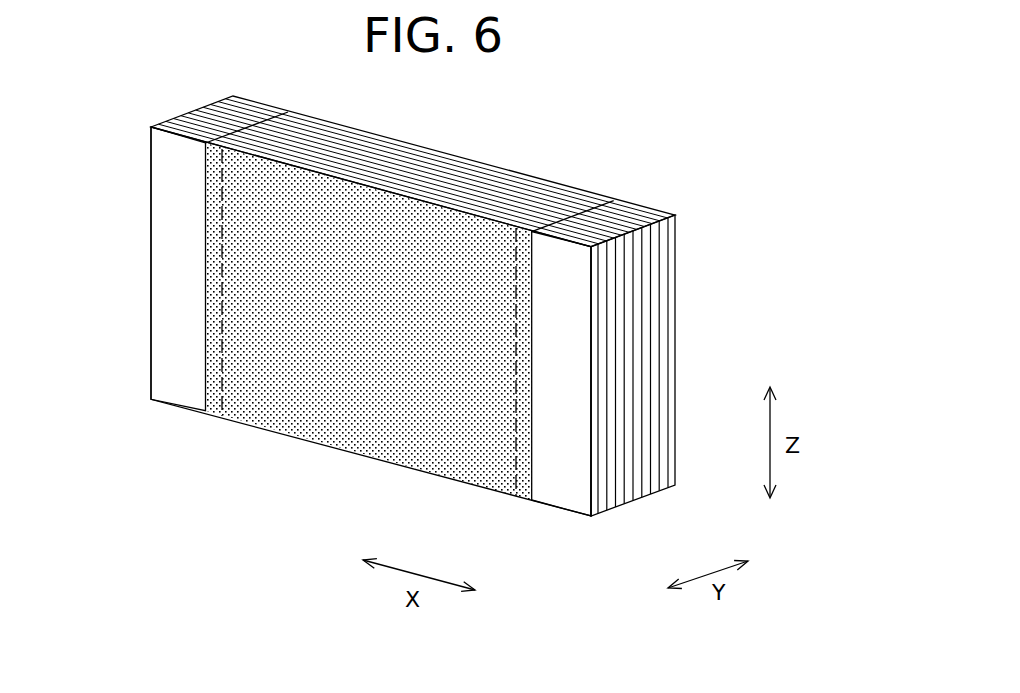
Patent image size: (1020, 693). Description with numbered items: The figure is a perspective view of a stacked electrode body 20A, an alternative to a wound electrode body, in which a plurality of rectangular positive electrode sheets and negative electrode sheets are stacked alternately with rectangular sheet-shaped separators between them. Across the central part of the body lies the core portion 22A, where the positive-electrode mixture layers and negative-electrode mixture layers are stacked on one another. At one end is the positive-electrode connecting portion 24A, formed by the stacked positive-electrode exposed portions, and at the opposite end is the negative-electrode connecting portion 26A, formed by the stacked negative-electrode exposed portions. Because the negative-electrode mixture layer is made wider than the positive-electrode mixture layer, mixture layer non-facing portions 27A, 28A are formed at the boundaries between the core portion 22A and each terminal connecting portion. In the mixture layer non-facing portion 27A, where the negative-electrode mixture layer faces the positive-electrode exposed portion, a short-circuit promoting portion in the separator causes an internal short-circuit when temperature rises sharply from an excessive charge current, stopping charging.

The stacked electrode body 20A is at (720, 121).
The core portion 22A is at (348, 448).
The positive-electrode connecting portion 24A is at (167, 354).
The negative-electrode connecting portion 26A is at (569, 487).
The mixture layer non-facing portion 27A is at (214, 407).
The mixture layer non-facing portion 28A is at (525, 497).